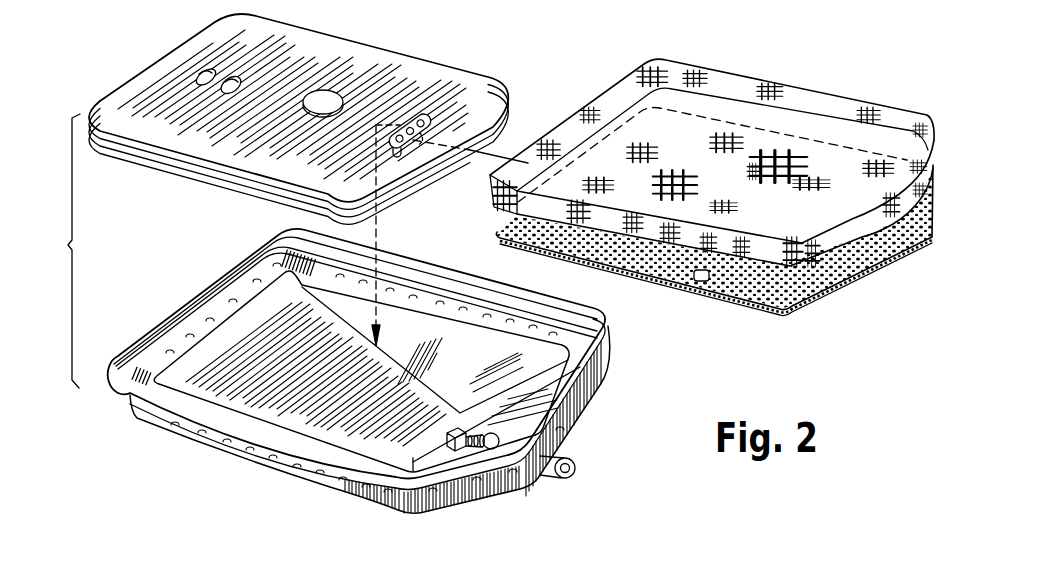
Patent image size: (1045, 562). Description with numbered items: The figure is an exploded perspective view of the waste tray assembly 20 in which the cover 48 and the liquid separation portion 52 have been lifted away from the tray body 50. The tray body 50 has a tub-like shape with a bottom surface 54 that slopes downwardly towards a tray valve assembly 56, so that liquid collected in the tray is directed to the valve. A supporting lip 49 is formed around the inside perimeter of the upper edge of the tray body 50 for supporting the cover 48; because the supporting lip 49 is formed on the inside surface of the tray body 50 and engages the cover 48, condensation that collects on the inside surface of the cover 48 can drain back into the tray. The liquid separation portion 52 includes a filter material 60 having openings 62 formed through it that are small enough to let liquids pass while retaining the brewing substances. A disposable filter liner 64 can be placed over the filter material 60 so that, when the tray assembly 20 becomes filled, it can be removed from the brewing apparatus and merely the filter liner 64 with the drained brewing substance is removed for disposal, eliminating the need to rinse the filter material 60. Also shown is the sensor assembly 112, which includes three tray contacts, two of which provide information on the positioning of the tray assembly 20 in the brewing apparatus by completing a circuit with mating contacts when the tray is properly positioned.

The tray assembly 20 is at (68, 245).
The cover 48 is at (150, 63).
The supporting lip 49 is at (218, 297).
The tray body 50 is at (350, 371).
The liquid separation portion 52 is at (712, 172).
The bottom surface 54 is at (313, 383).
The tray valve assembly 56 is at (504, 430).
The filter material 60 is at (714, 265).
The openings 62 is at (694, 280).
The disposable filter liner 64 is at (848, 235).
The sensor assembly 112 is at (407, 112).